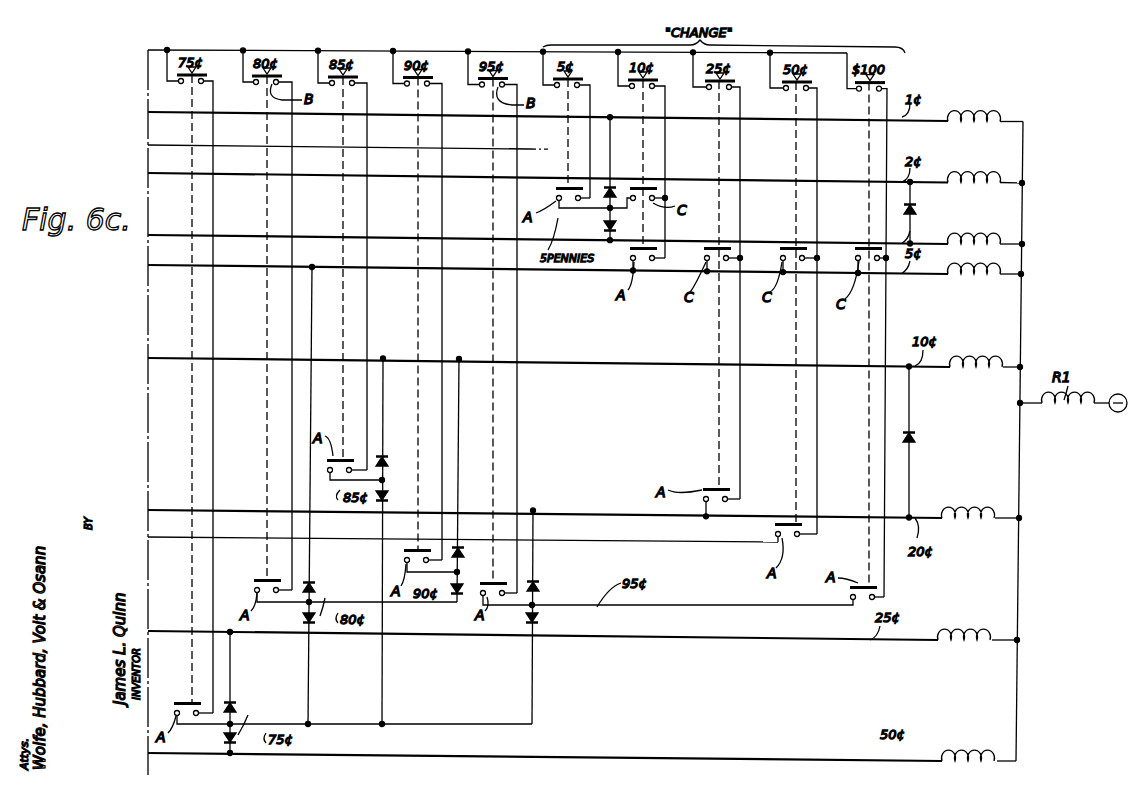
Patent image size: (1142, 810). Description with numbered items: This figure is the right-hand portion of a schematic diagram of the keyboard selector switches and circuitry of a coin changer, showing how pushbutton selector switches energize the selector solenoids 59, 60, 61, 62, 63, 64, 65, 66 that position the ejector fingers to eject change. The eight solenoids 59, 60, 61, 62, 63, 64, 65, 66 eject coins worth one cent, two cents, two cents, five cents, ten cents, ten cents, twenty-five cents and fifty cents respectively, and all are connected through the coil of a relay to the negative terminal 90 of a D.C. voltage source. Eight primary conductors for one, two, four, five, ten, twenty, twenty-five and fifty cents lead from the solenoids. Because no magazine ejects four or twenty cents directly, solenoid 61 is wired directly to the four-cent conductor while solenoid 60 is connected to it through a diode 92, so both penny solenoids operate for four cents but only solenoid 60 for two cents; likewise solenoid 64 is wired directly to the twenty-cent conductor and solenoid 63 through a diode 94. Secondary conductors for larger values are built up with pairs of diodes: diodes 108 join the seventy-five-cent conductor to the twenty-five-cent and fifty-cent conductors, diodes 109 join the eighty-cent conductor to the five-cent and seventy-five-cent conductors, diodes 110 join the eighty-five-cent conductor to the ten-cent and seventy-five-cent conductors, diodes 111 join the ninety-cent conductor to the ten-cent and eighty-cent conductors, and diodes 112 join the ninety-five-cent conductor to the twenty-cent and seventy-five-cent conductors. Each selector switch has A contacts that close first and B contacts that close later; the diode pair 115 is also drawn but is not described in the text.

The selector solenoid 59 is at (965, 125).
The selector solenoid 60 is at (966, 186).
The selector solenoid 61 is at (974, 230).
The selector solenoid 62 is at (968, 278).
The selector solenoid 63 is at (968, 371).
The selector solenoid 64 is at (968, 522).
The selector solenoid 65 is at (962, 644).
The selector solenoid 66 is at (968, 765).
The negative terminal 90 is at (1112, 410).
The diode 92 is at (917, 210).
The diode 94 is at (916, 438).
The pair of diodes 108 is at (237, 710).
The pair of diodes 109 is at (316, 590).
The pair of diodes 110 is at (402, 491).
The pair of diodes 111 is at (464, 588).
The pair of diodes 112 is at (540, 588).
The diode pair 115 is at (605, 203).